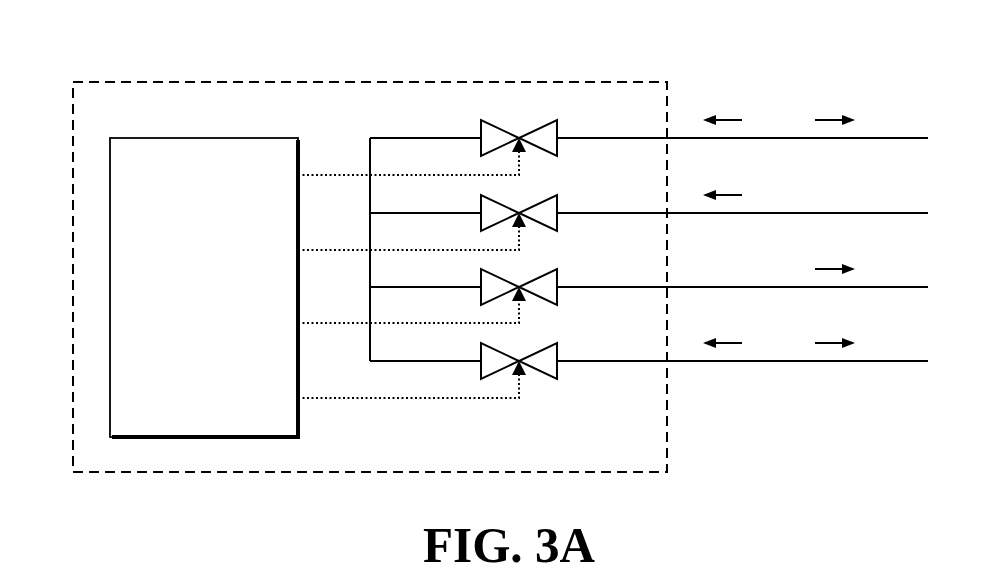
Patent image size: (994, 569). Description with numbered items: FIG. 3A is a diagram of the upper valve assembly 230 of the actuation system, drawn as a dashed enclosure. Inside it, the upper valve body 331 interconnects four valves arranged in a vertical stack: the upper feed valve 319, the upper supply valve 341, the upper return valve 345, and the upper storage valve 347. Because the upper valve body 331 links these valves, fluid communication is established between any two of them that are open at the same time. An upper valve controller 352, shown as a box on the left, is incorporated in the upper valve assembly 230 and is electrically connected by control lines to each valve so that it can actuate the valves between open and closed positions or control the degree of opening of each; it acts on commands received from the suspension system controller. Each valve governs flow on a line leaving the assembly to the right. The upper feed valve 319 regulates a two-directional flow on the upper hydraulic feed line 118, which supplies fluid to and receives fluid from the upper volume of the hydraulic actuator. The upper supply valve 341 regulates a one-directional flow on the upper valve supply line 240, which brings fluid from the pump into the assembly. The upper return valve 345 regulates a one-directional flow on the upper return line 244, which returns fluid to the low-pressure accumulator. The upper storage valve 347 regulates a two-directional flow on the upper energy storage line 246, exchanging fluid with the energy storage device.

The upper valve assembly 230 is at (108, 42).
The upper valve controller 352 is at (257, 138).
The upper valve body 331 is at (445, 138).
The upper feed valve 319 is at (557, 118).
The upper supply valve 341 is at (557, 193).
The upper return valve 345 is at (557, 267).
The upper storage valve 347 is at (557, 341).
The upper hydraulic feed line 118 is at (890, 138).
The upper valve supply line 240 is at (890, 213).
The upper return line 244 is at (890, 287).
The upper energy storage line 246 is at (890, 361).